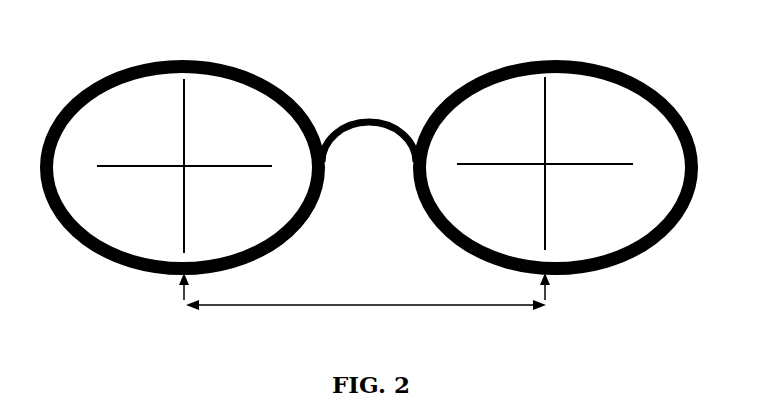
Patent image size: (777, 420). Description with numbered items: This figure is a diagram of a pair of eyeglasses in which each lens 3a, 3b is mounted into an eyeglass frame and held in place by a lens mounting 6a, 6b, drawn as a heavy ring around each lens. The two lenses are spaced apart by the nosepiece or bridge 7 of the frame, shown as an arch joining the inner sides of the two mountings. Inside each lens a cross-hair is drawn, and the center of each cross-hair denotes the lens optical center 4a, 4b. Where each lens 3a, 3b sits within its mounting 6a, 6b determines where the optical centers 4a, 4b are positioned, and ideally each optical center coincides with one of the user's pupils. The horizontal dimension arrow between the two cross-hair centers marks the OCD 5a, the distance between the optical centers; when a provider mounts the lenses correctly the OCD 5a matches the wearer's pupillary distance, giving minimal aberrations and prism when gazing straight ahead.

The lens 3a is at (147, 98).
The lens 3b is at (605, 97).
The optical center 4a is at (190, 162).
The optical center 4b is at (537, 158).
The OCD 5a is at (364, 291).
The lens mounting 6a is at (207, 60).
The lens mounting 6b is at (530, 60).
The bridge 7 is at (355, 130).